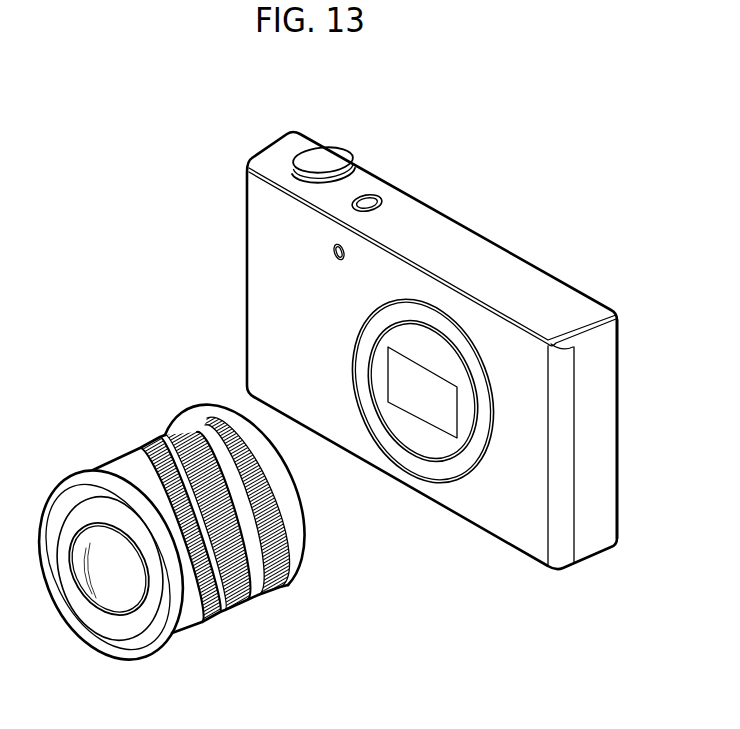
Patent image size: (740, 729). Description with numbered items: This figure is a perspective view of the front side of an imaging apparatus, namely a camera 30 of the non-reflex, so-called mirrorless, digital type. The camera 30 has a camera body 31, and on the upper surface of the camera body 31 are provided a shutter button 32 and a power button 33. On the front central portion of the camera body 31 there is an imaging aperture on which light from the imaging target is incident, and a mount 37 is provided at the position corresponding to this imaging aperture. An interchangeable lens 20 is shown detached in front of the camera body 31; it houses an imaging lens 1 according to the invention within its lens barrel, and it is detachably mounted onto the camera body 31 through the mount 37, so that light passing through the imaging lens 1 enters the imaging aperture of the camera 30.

The imaging lens 1 is at (118, 590).
The interchangeable lens 20 is at (97, 475).
The camera 30 is at (557, 207).
The camera body 31 is at (607, 403).
The shutter button 32 is at (331, 154).
The power button 33 is at (371, 195).
The mount 37 is at (443, 468).